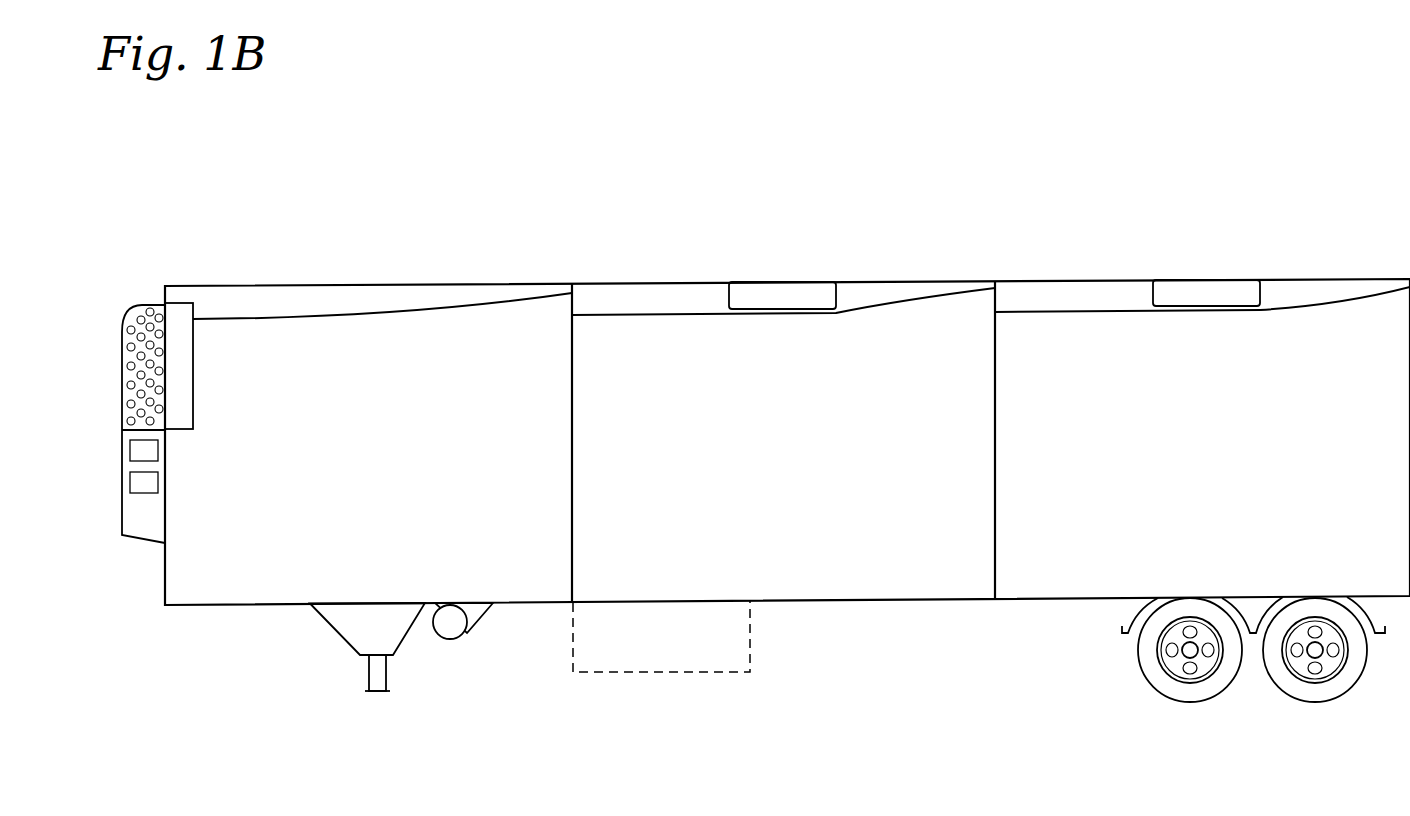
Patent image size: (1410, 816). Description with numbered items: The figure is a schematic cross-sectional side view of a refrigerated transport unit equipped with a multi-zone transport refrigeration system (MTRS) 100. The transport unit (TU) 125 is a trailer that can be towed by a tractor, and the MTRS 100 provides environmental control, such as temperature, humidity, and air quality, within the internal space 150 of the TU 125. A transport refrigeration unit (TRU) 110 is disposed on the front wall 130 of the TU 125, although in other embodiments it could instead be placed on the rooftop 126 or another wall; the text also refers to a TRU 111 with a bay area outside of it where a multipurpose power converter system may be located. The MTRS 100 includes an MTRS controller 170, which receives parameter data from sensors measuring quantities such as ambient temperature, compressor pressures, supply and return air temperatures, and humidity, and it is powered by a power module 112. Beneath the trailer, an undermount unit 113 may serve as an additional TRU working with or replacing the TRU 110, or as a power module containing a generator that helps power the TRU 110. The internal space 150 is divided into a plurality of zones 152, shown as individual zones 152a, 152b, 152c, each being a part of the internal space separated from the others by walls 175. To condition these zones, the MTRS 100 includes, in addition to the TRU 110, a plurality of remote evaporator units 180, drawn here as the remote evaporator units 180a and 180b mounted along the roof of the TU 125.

The multi-zone transport refrigeration system 100 is at (516, 142).
The transport refrigeration unit 110 is at (128, 441).
The TRU 111 is at (128, 386).
The power module 112 is at (134, 494).
The undermount unit 113 is at (663, 675).
The transport unit 125 is at (1327, 278).
The rooftop 126 is at (400, 282).
The front wall 130 is at (168, 582).
The internal space 150 is at (283, 577).
The zones 152 is at (847, 688).
The first zone 152a is at (353, 587).
The second zone 152b is at (726, 655).
The third zone 152c is at (1226, 655).
The MTRS controller 170 is at (132, 458).
The walls 175 is at (572, 348).
The remote evaporator units 180 is at (1002, 249).
The first remote evaporator unit 180a is at (778, 288).
The second remote evaporator unit 180b is at (1214, 277).